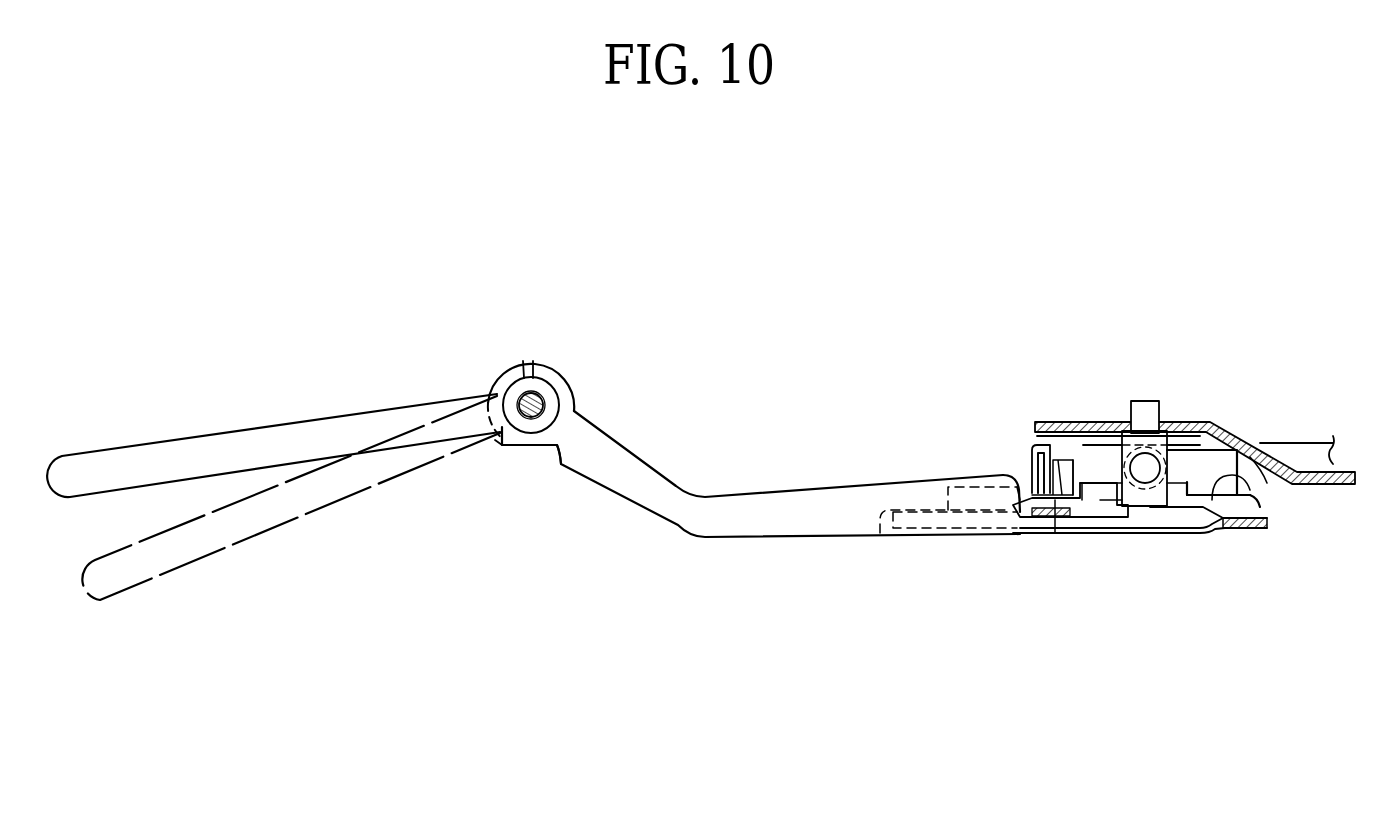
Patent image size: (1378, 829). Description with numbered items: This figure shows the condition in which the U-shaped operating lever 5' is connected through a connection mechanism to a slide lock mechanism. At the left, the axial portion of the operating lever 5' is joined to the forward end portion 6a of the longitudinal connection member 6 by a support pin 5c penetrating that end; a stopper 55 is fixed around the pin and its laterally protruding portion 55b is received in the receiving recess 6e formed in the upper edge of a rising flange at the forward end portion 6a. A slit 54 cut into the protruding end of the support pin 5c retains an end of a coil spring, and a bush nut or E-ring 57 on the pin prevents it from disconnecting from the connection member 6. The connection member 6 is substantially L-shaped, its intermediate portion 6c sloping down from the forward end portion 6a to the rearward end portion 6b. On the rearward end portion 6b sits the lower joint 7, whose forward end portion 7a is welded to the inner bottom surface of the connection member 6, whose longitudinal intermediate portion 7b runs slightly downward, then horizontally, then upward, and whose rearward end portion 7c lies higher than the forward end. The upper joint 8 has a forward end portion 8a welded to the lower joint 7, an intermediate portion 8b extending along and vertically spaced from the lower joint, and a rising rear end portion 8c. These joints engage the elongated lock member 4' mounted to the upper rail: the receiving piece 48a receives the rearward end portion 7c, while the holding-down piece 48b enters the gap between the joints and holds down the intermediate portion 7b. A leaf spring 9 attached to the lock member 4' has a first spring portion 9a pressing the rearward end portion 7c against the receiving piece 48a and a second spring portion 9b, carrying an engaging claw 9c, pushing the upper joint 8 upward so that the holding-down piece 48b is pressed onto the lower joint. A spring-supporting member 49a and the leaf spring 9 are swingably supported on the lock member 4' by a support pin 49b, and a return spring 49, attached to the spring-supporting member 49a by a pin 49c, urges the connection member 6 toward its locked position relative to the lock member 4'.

The operating lever 5' is at (273, 412).
The stopper 55 is at (533, 359).
The protruding portion 55b is at (563, 377).
The support pin 5c is at (529, 422).
The longitudinal connection member 6 is at (706, 541).
The forward end portion 6a is at (493, 381).
The rearward end portion 6b is at (1020, 535).
The intermediate portion 6c is at (797, 510).
The receiving recess 6e is at (525, 368).
The slit 54 is at (503, 447).
The bush nut or E-ring 57 is at (558, 455).
The lock member 4' is at (1195, 385).
The return spring 49 is at (1258, 440).
The spring-supporting member 49a is at (1121, 459).
The support pin 49b is at (1118, 475).
The pin 49c is at (1146, 401).
The receiving piece 48a is at (1258, 509).
The holding-down piece 48b is at (1055, 535).
The upper joint 8 is at (1022, 486).
The forward end portion 8a is at (940, 482).
The intermediate portion 8b is at (1018, 478).
The rear end portion 8c is at (1082, 460).
The leaf spring 9 is at (1192, 449).
The first spring portion 9a is at (1250, 457).
The second spring portion 9b is at (1068, 460).
The engaging claw 9c is at (1025, 485).
The lower joint 7 is at (1160, 536).
The forward end portion 7a is at (877, 537).
The longitudinal intermediate portion 7b is at (1078, 505).
The rearward end portion 7c is at (1228, 504).